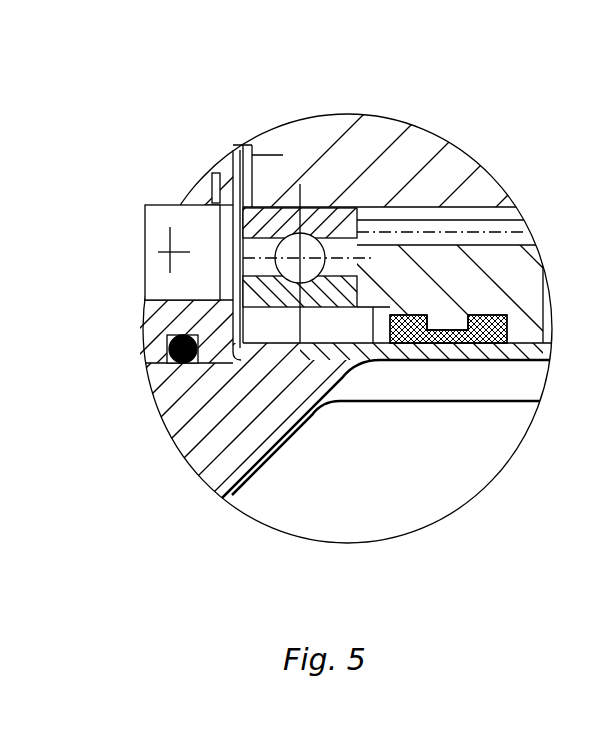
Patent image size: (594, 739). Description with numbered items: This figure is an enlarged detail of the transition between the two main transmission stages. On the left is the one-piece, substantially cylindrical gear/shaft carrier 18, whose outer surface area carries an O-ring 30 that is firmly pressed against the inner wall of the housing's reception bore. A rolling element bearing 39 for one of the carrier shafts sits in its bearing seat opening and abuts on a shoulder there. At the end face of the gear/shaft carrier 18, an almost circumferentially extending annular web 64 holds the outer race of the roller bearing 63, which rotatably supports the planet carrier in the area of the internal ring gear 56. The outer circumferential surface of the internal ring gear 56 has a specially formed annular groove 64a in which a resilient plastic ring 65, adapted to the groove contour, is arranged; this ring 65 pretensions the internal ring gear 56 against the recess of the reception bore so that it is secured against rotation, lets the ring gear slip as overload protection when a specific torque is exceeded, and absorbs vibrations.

The gear/shaft carrier 18 is at (165, 313).
The O-ring 30 is at (182, 352).
The rolling element bearing 39 is at (180, 238).
The internal ring gear 56 is at (512, 285).
The roller bearing 63 is at (330, 213).
The annular web 64 is at (295, 343).
The annular groove 64a is at (430, 315).
The resilient plastic ring 65 is at (428, 342).